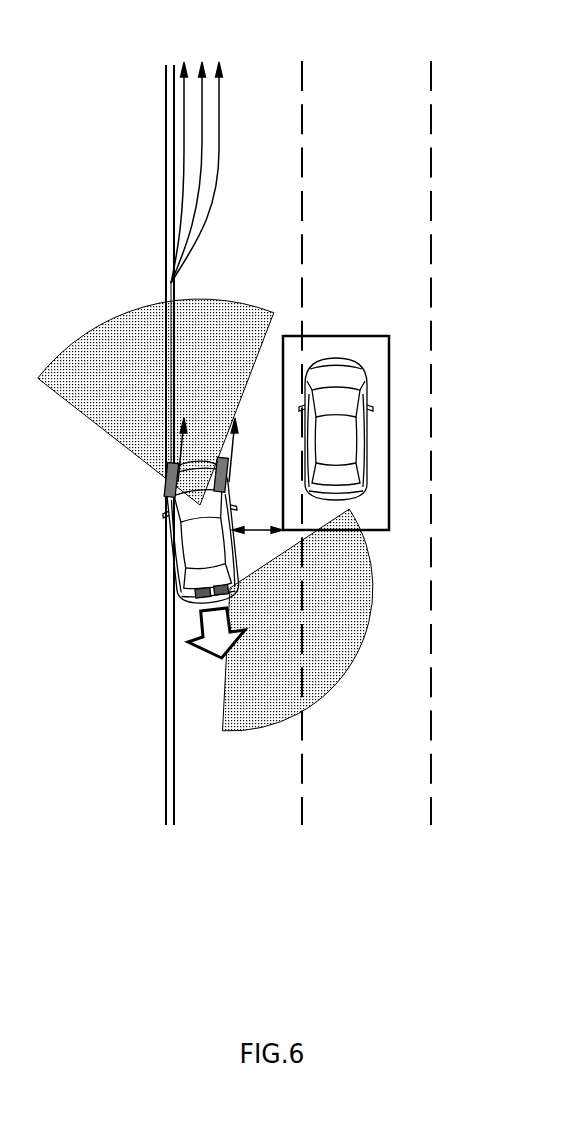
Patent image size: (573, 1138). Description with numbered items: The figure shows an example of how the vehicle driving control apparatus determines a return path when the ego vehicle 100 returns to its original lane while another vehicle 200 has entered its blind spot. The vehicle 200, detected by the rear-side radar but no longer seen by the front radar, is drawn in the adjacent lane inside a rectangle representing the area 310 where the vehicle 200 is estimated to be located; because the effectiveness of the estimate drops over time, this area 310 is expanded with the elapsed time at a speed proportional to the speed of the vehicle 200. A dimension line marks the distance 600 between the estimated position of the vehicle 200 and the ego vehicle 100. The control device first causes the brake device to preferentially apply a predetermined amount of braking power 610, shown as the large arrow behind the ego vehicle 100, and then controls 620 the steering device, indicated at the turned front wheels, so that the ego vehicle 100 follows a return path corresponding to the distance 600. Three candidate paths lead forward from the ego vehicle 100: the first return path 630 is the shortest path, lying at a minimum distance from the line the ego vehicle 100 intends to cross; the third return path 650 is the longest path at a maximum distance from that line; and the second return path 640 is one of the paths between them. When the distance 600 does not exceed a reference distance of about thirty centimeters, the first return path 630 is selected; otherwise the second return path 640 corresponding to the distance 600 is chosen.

The ego vehicle 100 is at (207, 543).
The vehicle 200 is at (337, 439).
The area where the vehicle is located 310 is at (367, 336).
The distance 600 is at (257, 518).
The braking power 610 is at (203, 620).
The steering control 620 is at (160, 490).
The first return path 630 is at (183, 63).
The second return path 640 is at (202, 63).
The third return path 650 is at (220, 63).